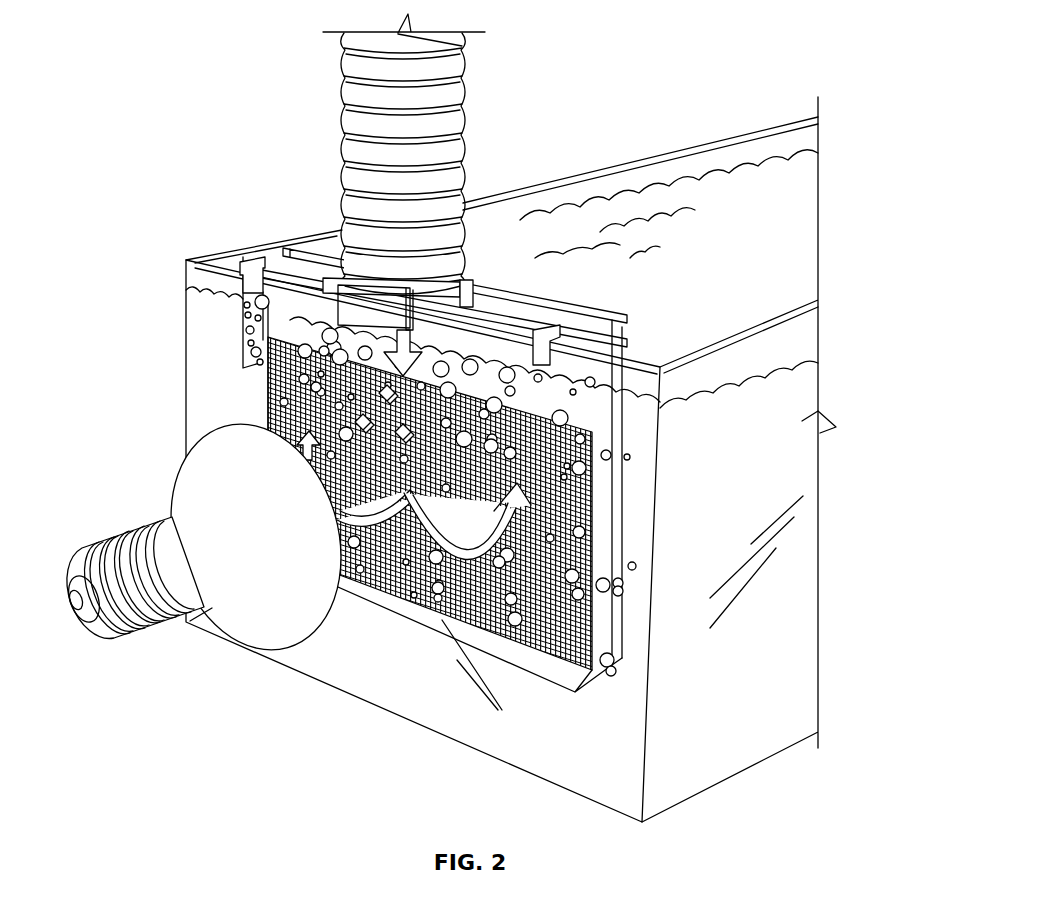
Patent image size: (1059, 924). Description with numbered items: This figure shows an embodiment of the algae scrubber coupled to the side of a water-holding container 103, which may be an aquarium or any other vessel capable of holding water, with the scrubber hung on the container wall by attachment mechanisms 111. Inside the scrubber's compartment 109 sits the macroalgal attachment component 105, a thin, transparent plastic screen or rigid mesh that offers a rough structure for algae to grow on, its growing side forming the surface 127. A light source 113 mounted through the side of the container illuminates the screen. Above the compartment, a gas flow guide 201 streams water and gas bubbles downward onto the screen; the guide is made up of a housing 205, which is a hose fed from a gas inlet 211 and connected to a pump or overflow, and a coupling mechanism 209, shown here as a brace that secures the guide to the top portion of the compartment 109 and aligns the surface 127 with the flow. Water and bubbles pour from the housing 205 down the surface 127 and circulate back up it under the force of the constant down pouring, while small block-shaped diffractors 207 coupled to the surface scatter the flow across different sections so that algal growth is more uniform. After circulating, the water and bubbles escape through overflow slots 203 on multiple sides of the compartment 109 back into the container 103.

The container 103 is at (706, 142).
The macroalgal attachment component 105 is at (592, 556).
The compartment 109 is at (618, 318).
The attachment mechanism 111 is at (563, 332).
The light source 113 is at (232, 634).
The surface 127 is at (592, 602).
The gas flow guide 201 is at (463, 98).
The overflow slots 203 is at (250, 358).
The housing 205 is at (462, 278).
The diffractors 207 is at (352, 382).
The coupling mechanism 209 is at (472, 282).
The gas inlet 211 is at (462, 300).